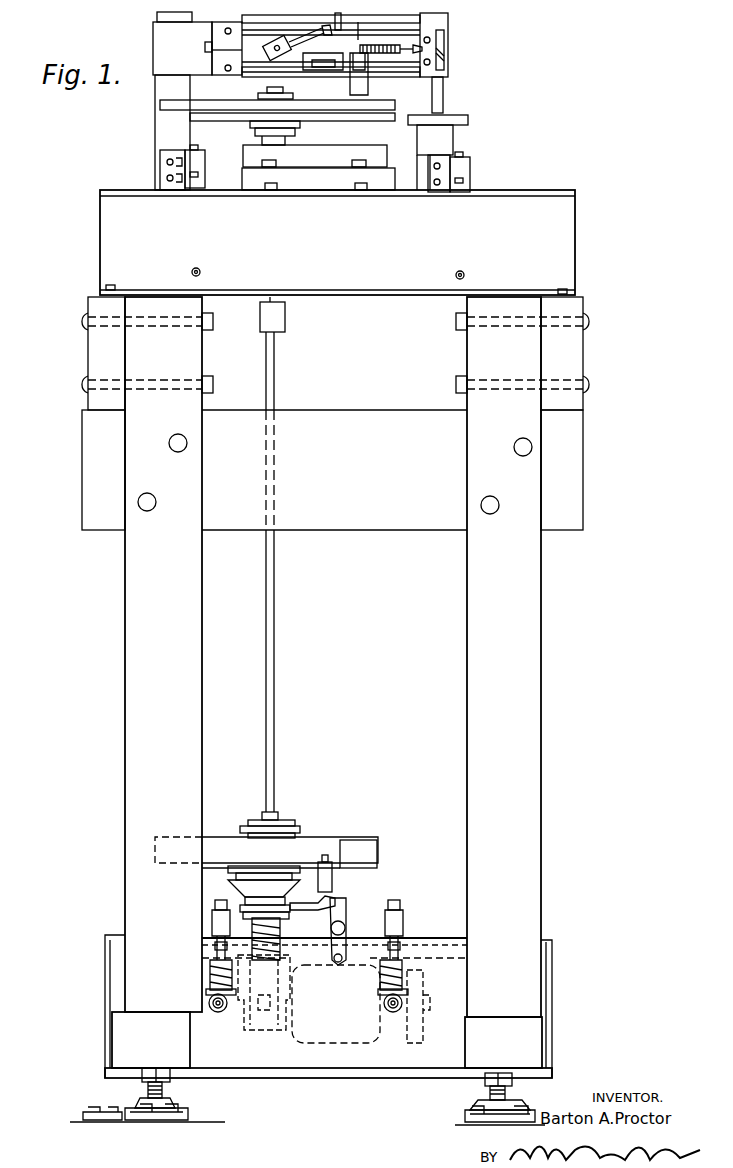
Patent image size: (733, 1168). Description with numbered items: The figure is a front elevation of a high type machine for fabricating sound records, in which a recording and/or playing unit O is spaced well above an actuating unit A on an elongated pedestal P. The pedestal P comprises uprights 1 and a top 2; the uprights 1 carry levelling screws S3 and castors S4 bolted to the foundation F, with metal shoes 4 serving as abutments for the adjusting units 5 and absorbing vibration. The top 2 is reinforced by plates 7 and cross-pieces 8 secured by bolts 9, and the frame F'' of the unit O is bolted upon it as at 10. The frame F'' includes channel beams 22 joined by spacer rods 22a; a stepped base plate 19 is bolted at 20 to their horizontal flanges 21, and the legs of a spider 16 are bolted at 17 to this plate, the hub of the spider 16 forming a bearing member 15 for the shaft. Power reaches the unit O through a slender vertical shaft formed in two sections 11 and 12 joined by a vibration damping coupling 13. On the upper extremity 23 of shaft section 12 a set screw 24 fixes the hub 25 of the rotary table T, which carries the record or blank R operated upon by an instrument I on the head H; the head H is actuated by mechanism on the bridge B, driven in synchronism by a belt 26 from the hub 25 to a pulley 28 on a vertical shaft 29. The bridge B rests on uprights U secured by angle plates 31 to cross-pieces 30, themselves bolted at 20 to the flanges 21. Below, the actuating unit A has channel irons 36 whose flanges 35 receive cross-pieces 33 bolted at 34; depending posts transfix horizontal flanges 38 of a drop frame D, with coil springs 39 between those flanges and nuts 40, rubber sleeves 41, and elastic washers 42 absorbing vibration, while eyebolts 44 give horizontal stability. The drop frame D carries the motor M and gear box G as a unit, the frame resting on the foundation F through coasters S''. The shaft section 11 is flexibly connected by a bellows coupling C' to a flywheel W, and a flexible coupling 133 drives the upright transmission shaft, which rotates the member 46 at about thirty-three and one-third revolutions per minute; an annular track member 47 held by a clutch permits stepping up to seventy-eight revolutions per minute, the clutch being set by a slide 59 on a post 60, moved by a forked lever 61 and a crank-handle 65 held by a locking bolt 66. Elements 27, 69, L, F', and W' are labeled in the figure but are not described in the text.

The uprights 1 is at (126, 738).
The top 2 is at (80, 344).
The metal shoes 4 is at (114, 1025).
The adjusting units 5 is at (158, 1070).
The plates 7 is at (100, 360).
The cross-pieces 8 is at (82, 472).
The bolts 9 is at (213, 386).
The bolts 10 is at (111, 285).
The shaft section 11 is at (276, 605).
The shaft section 12 is at (285, 302).
The coupling 13 is at (282, 320).
The complemental bearing member 15 is at (290, 143).
The spider 16 is at (250, 160).
The bolts 17 is at (276, 162).
The stepped base plate 19 is at (387, 160).
The bolts 20 is at (268, 190).
The horizontal flanges 21 is at (396, 192).
The channel beams 22 is at (112, 206).
The spacer rods 22a is at (200, 270).
The upper extremity 23 is at (258, 133).
The set screw 24 is at (285, 68).
The hub 25 is at (262, 115).
The belt 26 is at (340, 112).
The disc 27 is at (250, 125).
The pulley 28 is at (468, 118).
The vertical shaft 29 is at (446, 66).
The cross-pieces 30 is at (192, 158).
The angle plates 31 is at (162, 164).
The cross-pieces 33 is at (212, 920).
The bolts 34 is at (215, 905).
The flanges 35 is at (440, 938).
The channel irons 36 is at (548, 1000).
The horizontal flanges 38 is at (205, 958).
The coil springs 39 is at (210, 975).
The nuts 40 is at (244, 900).
The sleeves 41 is at (215, 946).
The washers 42 is at (206, 991).
The eyebolts 44 is at (216, 1012).
The driven member 46 is at (250, 880).
The annular track member 47 is at (240, 870).
The slide 59 is at (320, 846).
The post 60 is at (332, 858).
The forked lever 61 is at (330, 892).
The crank-handle 65 is at (336, 963).
The locking bolt 66 is at (344, 924).
The disc 69 is at (268, 873).
The flexible coupling 133 is at (280, 942).
The actuating unit A is at (380, 838).
The bridge B is at (152, 38).
The bellows coupling C' is at (260, 817).
The drop frame D is at (405, 955).
The foundation F is at (49, 1098).
The frame base F' is at (365, 1099).
The frame F'' is at (55, 243).
The gear box G is at (262, 1030).
The head H is at (350, 88).
The instrument I is at (365, 98).
The lever L is at (385, 56).
The motor M is at (318, 1040).
The recording and/or playing unit O is at (148, 44).
The pedestal P is at (122, 612).
The record or blank R is at (186, 102).
The levelling screws S3 is at (146, 1088).
The coasters S'' is at (342, 1094).
The castors S4 is at (190, 1115).
The rotary table T is at (160, 104).
The uprights U is at (157, 118).
The flywheel W is at (266, 834).
The work support W' is at (428, 1017).